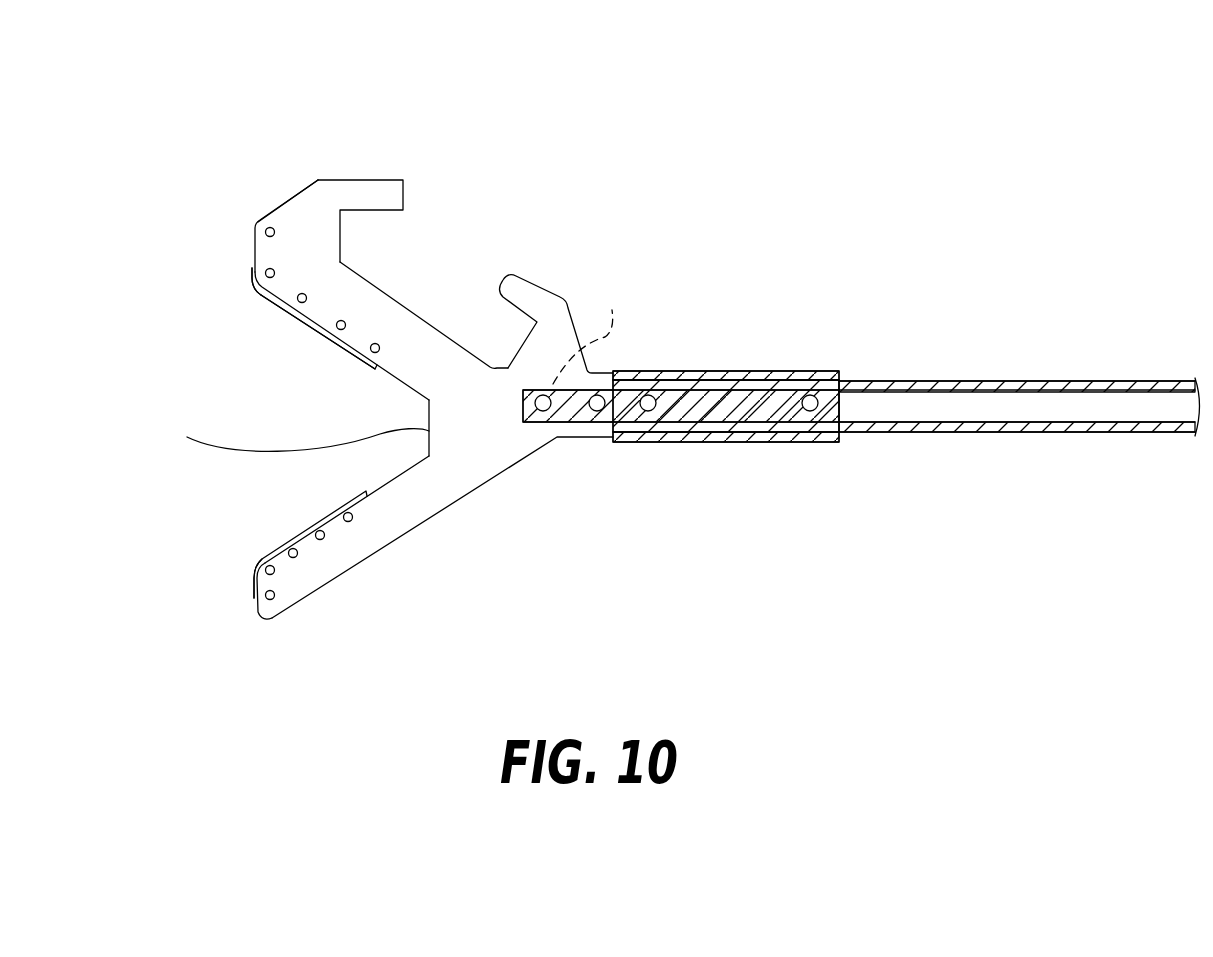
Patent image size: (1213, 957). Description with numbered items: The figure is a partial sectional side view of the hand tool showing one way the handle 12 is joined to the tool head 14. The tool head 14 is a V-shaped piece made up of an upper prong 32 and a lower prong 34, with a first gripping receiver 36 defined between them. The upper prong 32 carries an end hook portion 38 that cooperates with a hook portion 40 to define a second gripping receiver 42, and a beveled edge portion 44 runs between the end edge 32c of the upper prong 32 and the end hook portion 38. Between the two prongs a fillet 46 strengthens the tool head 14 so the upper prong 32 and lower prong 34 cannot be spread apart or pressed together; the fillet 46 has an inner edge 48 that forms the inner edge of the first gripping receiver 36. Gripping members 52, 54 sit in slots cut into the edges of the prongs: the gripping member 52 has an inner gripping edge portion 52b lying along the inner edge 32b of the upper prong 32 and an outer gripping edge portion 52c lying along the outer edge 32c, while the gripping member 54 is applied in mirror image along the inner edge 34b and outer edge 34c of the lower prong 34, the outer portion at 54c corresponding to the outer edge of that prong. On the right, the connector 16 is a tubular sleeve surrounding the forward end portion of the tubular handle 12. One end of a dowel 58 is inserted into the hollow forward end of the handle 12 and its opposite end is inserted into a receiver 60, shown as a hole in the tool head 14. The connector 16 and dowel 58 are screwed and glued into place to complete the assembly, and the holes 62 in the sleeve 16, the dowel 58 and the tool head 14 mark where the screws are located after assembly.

The handle 12 is at (1004, 442).
The tool head 14 is at (365, 366).
The connector 16 is at (717, 450).
The upper prong 32 is at (293, 297).
The inner edge 32b is at (377, 366).
The outer edge 32c is at (255, 238).
The lower prong 34 is at (369, 551).
The inner edge 34b is at (362, 491).
The outer edge 34c is at (261, 589).
The first gripping receiver 36 is at (266, 432).
The end hook portion 38 is at (366, 180).
The hook portion 40 is at (522, 283).
The second gripping receiver 42 is at (416, 265).
The beveled edge portion 44 is at (297, 197).
The fillet 46 is at (482, 438).
The inner edge 48 is at (293, 434).
The gripping member 52 is at (247, 304).
The inner gripping edge portion 52b is at (300, 314).
The outer gripping edge portion 52c is at (256, 270).
The gripping member 54 is at (250, 556).
The second pad end portion 54c is at (260, 568).
The dowel 58 is at (754, 393).
The receiver 60 is at (590, 333).
The holes 62 is at (543, 411).